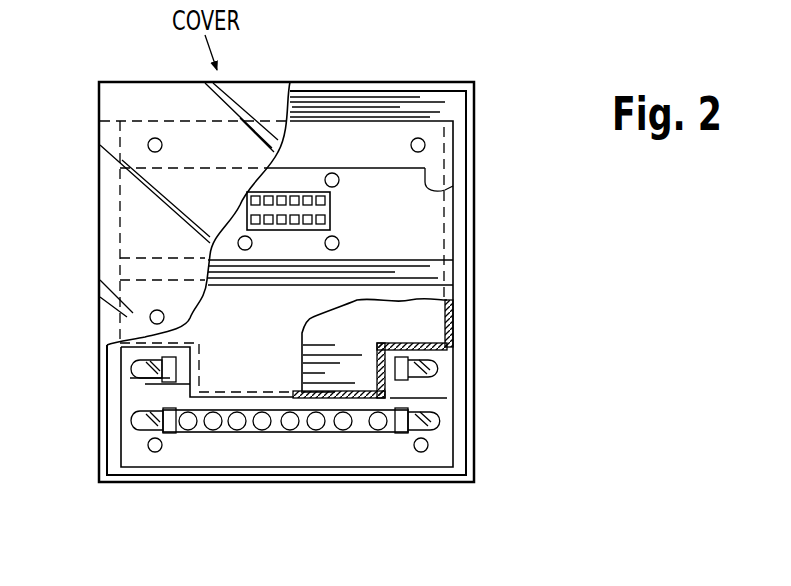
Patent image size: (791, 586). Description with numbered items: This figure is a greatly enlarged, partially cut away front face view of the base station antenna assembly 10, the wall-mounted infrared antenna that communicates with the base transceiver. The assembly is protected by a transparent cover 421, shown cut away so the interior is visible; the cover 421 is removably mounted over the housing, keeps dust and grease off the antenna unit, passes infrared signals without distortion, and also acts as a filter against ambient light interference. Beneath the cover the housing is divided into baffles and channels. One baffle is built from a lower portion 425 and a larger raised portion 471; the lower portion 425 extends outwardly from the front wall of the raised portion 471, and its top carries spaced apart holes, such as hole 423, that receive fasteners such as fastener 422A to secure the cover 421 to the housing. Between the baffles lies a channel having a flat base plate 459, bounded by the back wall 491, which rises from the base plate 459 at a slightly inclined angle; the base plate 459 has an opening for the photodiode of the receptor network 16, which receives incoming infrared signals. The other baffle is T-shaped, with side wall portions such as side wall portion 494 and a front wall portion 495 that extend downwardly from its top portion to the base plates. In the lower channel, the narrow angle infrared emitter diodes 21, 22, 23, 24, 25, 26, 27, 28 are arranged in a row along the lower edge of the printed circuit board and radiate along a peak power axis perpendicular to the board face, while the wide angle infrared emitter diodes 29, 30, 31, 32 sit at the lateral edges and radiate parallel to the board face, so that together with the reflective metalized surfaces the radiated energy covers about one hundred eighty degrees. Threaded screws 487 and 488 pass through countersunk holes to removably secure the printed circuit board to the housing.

The base station antenna assembly 10 is at (654, 282).
The receptor network 16 is at (362, 229).
The narrow angle infrared emitter diode 21 is at (186, 441).
The narrow angle infrared emitter diode 22 is at (211, 441).
The narrow angle infrared emitter diode 23 is at (235, 441).
The narrow angle infrared emitter diode 24 is at (262, 441).
The narrow angle infrared emitter diode 25 is at (290, 441).
The narrow angle infrared emitter diode 26 is at (316, 441).
The narrow angle infrared emitter diode 27 is at (343, 441).
The narrow angle infrared emitter diode 28 is at (378, 441).
The wide angle infrared emitter diode 29 is at (445, 422).
The wide angle infrared emitter diode 30 is at (446, 368).
The wide angle infrared emitter diode 31 is at (132, 421).
The wide angle infrared emitter diode 32 is at (133, 366).
The transparent cover 421 is at (142, 90).
The fastener 422A is at (148, 145).
The hole 423 is at (476, 132).
The lower portion 425 is at (342, 138).
The flat base plate 459 is at (427, 212).
The raised portion 471 is at (442, 98).
The threaded screw 487 is at (148, 446).
The threaded screw 488 is at (428, 445).
The back wall 491 is at (458, 182).
The side wall portion 494 is at (452, 318).
The front wall portion 495 is at (456, 398).